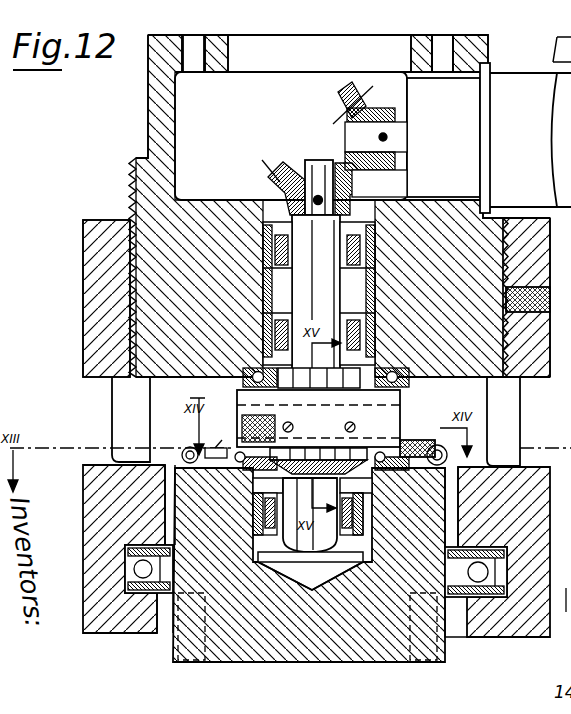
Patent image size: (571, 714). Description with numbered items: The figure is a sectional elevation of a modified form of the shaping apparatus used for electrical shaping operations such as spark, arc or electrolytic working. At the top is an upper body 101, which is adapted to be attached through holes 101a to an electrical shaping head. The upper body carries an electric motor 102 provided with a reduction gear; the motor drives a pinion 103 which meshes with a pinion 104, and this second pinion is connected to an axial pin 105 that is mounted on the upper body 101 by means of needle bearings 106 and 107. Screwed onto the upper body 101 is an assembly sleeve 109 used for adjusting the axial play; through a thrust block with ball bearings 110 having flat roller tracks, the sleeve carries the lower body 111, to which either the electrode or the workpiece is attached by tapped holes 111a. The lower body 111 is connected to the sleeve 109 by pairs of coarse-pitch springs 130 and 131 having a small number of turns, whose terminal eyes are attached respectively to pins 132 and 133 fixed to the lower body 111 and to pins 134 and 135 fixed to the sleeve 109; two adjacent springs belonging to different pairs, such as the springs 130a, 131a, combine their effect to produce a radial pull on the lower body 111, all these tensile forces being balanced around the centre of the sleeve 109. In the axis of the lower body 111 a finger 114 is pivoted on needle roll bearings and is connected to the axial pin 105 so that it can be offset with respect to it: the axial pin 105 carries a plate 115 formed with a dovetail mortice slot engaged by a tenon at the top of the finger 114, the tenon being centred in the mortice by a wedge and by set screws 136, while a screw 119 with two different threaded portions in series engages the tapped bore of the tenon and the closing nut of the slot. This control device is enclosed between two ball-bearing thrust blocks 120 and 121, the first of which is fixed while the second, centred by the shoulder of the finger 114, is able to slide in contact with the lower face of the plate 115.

The upper body 101 is at (158, 136).
The holes 101a is at (193, 48).
The electric motor 102 is at (522, 95).
The pinion 103 is at (348, 96).
The pinion 104 is at (272, 166).
The axial pin 105 is at (325, 292).
The needle bearing 106 is at (385, 230).
The needle bearing 107 is at (366, 332).
The assembly sleeve 109 is at (537, 335).
The thrust block with ball bearings 110 is at (486, 596).
The lower body 111 is at (233, 632).
The tapped holes 111a is at (428, 658).
The finger 114 is at (263, 557).
The plate 115 is at (244, 372).
The screw 119 is at (440, 444).
The ball bearing thrust block 120 is at (393, 380).
The ball bearing thrust block 121 is at (372, 485).
The coarse-pitch spring 130 is at (232, 476).
The spring 130a is at (493, 432).
The coarse-pitch spring 131 is at (184, 450).
The spring 131a is at (415, 440).
The pin 132 is at (466, 468).
The pin 133 is at (180, 542).
The pin 134 is at (207, 446).
The pin 135 is at (388, 515).
The set screws 136 is at (348, 425).